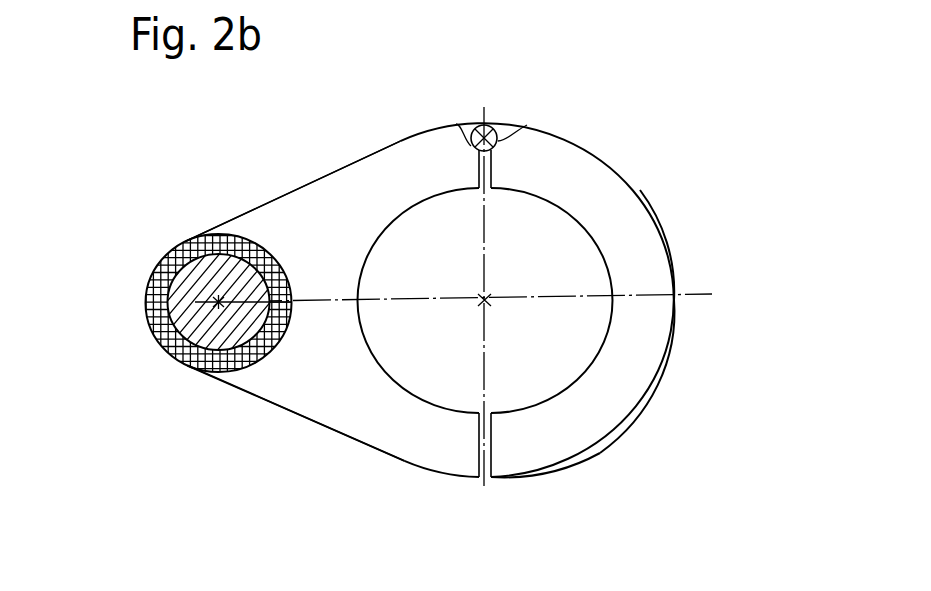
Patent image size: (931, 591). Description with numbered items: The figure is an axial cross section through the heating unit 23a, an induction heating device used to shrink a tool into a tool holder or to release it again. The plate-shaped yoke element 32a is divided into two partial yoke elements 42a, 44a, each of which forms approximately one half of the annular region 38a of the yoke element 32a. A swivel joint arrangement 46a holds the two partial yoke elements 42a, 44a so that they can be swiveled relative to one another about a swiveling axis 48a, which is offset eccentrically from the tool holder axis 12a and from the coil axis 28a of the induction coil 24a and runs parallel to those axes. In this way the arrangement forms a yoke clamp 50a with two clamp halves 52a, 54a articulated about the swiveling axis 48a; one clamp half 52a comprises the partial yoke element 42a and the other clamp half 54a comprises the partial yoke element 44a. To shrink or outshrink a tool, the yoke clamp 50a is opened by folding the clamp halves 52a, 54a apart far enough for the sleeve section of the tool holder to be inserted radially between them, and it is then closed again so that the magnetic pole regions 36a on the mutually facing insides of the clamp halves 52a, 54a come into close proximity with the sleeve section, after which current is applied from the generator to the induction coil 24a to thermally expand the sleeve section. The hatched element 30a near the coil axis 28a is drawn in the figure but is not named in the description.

The tool holder axis 12a is at (483, 301).
The heating unit 23a is at (136, 293).
The induction coil 24a is at (150, 334).
The coil axis 28a is at (216, 299).
The inner core of the bushing 30a is at (224, 337).
The yoke element 32a is at (297, 416).
The magnetic pole regions 36a is at (570, 219).
The annular region 38a is at (640, 368).
The partial yoke element 42a is at (410, 463).
The partial yoke element 44a is at (583, 453).
The swivel joint arrangement 46a is at (459, 124).
The swiveling axis 48a is at (527, 125).
The yoke clamp 50a is at (648, 200).
The clamp half 52a is at (328, 175).
The clamp half 54a is at (668, 248).